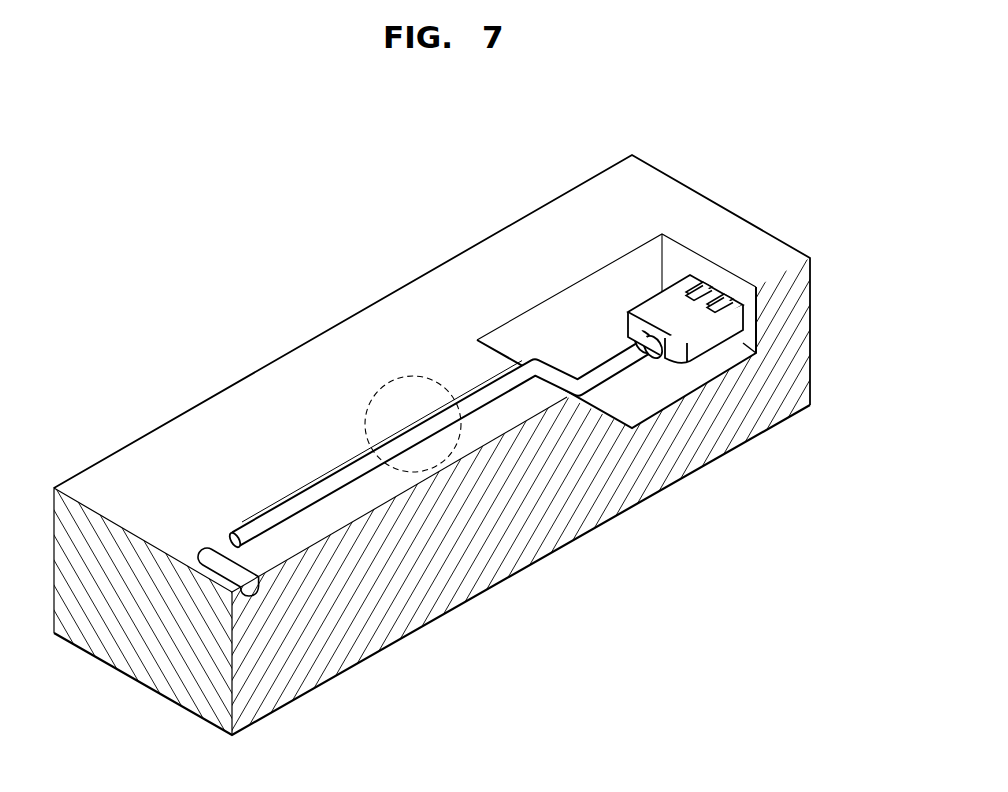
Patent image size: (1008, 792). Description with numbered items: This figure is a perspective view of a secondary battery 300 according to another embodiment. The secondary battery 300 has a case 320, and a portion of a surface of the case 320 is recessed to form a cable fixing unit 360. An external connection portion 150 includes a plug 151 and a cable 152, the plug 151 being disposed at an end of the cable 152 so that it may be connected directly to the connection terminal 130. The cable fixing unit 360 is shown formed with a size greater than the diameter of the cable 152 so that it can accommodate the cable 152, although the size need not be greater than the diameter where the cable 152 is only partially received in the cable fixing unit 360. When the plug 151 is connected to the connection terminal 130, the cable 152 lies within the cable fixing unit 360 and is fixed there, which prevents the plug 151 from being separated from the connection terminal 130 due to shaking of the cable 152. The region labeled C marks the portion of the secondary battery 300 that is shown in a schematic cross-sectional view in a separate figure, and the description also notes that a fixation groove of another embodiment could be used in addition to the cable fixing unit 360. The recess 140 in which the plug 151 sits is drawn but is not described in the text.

The secondary battery 300 is at (358, 215).
The case 320 is at (210, 422).
The cable fixing unit 360 is at (210, 553).
The external connection portion 150 is at (523, 117).
The plug 151 is at (660, 312).
The cable 152 is at (597, 372).
The connection terminal 130 is at (708, 287).
The accommodating recess 140 is at (643, 398).
The portion C is at (392, 378).